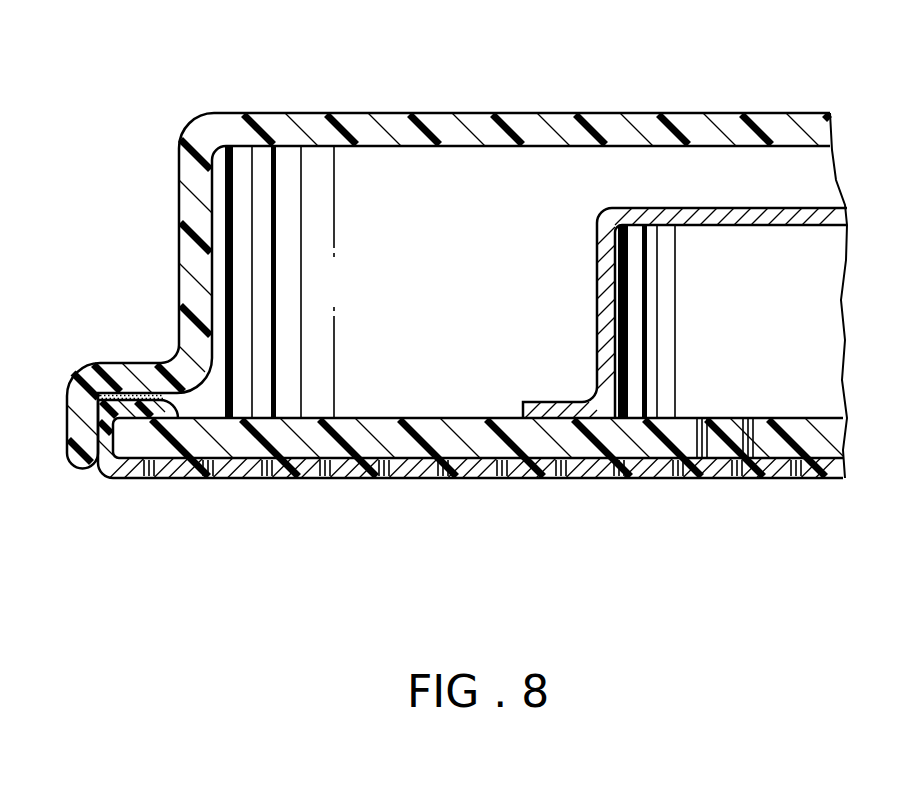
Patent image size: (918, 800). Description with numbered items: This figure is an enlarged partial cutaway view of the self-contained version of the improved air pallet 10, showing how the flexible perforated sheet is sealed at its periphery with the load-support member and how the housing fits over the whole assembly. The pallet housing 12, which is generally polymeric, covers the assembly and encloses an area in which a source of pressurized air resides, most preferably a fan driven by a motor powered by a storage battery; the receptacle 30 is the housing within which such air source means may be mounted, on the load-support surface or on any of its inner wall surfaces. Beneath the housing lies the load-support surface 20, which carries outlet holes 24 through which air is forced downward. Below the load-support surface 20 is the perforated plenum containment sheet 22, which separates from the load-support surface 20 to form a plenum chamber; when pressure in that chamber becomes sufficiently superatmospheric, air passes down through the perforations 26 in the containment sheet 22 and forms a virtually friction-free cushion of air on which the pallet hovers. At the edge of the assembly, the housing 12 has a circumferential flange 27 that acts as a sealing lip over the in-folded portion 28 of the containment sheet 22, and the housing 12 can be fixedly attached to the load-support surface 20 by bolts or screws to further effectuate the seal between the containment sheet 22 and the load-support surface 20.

The pallet 10 is at (377, 80).
The pallet housing 12 is at (205, 137).
The load-support surface 20 is at (390, 432).
The perforated plenum containment sheet 22 is at (173, 468).
The outlet holes 24 is at (735, 445).
The perforations 26 is at (322, 477).
The circumferential flange 27 is at (113, 380).
The in-folded portion 28 is at (98, 402).
The receptacle 30 is at (604, 280).